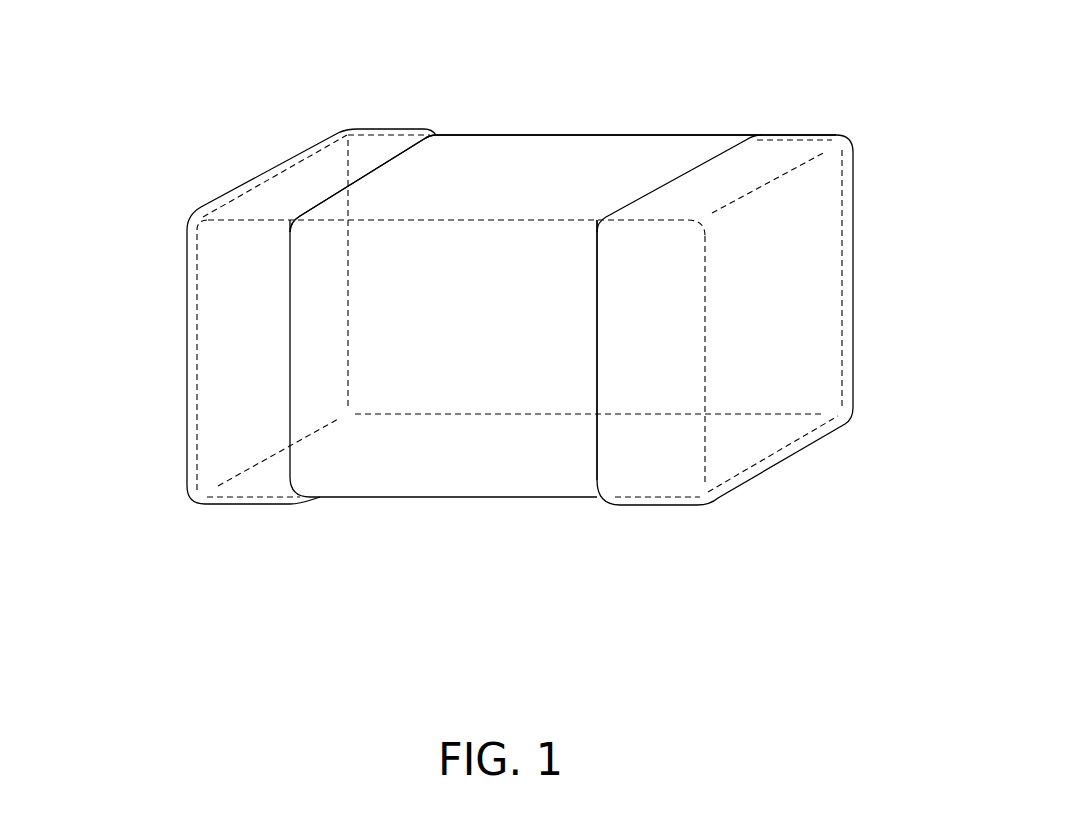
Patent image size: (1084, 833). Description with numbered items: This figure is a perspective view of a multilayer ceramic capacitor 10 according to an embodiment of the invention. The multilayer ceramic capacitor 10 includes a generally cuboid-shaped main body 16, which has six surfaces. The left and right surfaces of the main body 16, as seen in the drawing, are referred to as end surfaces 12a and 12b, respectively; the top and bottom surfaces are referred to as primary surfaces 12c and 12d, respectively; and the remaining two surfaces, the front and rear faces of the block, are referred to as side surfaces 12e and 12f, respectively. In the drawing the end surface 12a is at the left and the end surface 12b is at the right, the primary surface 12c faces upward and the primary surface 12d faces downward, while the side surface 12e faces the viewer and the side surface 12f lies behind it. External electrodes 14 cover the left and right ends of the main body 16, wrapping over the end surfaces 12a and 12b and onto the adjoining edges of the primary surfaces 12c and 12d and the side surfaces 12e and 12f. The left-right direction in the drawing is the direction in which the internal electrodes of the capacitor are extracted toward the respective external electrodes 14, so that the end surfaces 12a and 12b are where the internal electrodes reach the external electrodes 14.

The multilayer ceramic capacitor 10 is at (501, 300).
The end surface 12a is at (227, 327).
The end surface 12b is at (813, 265).
The primary surface 12c is at (515, 160).
The primary surface 12d is at (530, 472).
The side surface 12e is at (407, 458).
The side surface 12f is at (613, 173).
The external electrode 14 is at (185, 343).
The main body 16 is at (470, 172).